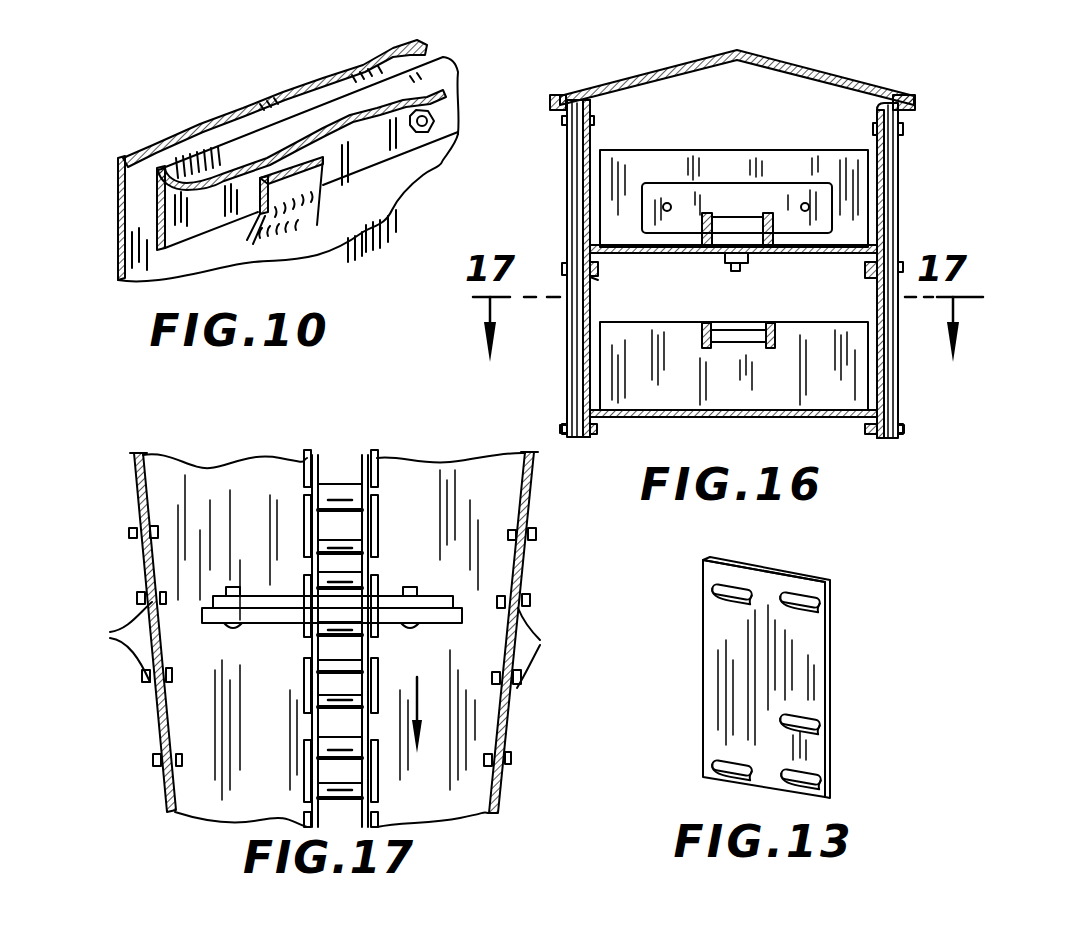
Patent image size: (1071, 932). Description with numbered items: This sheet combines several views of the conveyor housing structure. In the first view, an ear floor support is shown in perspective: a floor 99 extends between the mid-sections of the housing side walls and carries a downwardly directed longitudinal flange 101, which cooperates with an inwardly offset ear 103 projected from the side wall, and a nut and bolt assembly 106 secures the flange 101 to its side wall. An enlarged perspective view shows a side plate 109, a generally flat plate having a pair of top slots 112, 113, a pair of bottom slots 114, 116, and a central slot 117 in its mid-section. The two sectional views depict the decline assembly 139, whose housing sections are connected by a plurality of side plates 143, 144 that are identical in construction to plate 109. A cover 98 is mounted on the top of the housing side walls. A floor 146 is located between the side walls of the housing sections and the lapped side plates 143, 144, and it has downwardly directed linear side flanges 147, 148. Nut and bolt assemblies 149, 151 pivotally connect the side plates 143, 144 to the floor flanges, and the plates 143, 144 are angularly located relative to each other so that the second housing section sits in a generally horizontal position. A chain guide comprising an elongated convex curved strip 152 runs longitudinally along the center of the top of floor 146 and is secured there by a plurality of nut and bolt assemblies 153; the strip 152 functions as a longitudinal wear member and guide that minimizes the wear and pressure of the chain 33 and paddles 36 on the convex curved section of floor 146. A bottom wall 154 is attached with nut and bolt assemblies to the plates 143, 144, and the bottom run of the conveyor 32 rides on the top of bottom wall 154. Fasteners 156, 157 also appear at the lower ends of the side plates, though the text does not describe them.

In FIG. 16, the conveyor 32 is at (731, 242).
In FIG. 17, the conveyor 32 is at (398, 455).
In FIG. 16, the chain 33 is at (745, 218).
In FIG. 17, the chain 33 is at (378, 518).
In FIG. 16, the paddles 36 is at (742, 165).
In FIG. 17, the paddles 36 is at (216, 625).
In FIG. 16, the cover 98 is at (665, 68).
In FIG. 10, the floor 99 is at (217, 158).
In FIG. 10, the longitudinal flange 101 is at (158, 190).
In FIG. 10, the ear 103 is at (290, 215).
In FIG. 10, the nut and bolt assembly 106 is at (426, 135).
In FIG. 13, the side plate 109 is at (812, 657).
In FIG. 13, the top slot 112 is at (732, 580).
In FIG. 13, the top slot 113 is at (800, 592).
In FIG. 13, the bottom slot 114 is at (710, 762).
In FIG. 13, the bottom slot 116 is at (822, 774).
In FIG. 13, the central slot 117 is at (822, 722).
In FIG. 17, the decline assembly 139 is at (317, 604).
In FIG. 16, the side plate 143 is at (570, 143).
In FIG. 17, the side plate 143 is at (160, 721).
In FIG. 16, the side plate 144 is at (888, 168).
In FIG. 17, the side plate 144 is at (503, 733).
In FIG. 16, the floor 146 is at (698, 253).
In FIG. 17, the floor 146 is at (232, 487).
In FIG. 16, the side flange 147 is at (598, 280).
In FIG. 16, the side flange 148 is at (870, 280).
In FIG. 16, the nut and bolt assembly 149 is at (600, 266).
In FIG. 17, the nut and bolt assembly 149 is at (106, 642).
In FIG. 16, the nut and bolt assembly 151 is at (903, 265).
In FIG. 17, the nut and bolt assembly 151 is at (552, 648).
In FIG. 16, the strip 152 is at (756, 243).
In FIG. 16, the nut and bolt assembly 153 is at (736, 266).
In FIG. 16, the bottom wall 154 is at (663, 418).
In FIG. 16, the bolt 156 is at (560, 427).
In FIG. 16, the bolt 157 is at (903, 427).